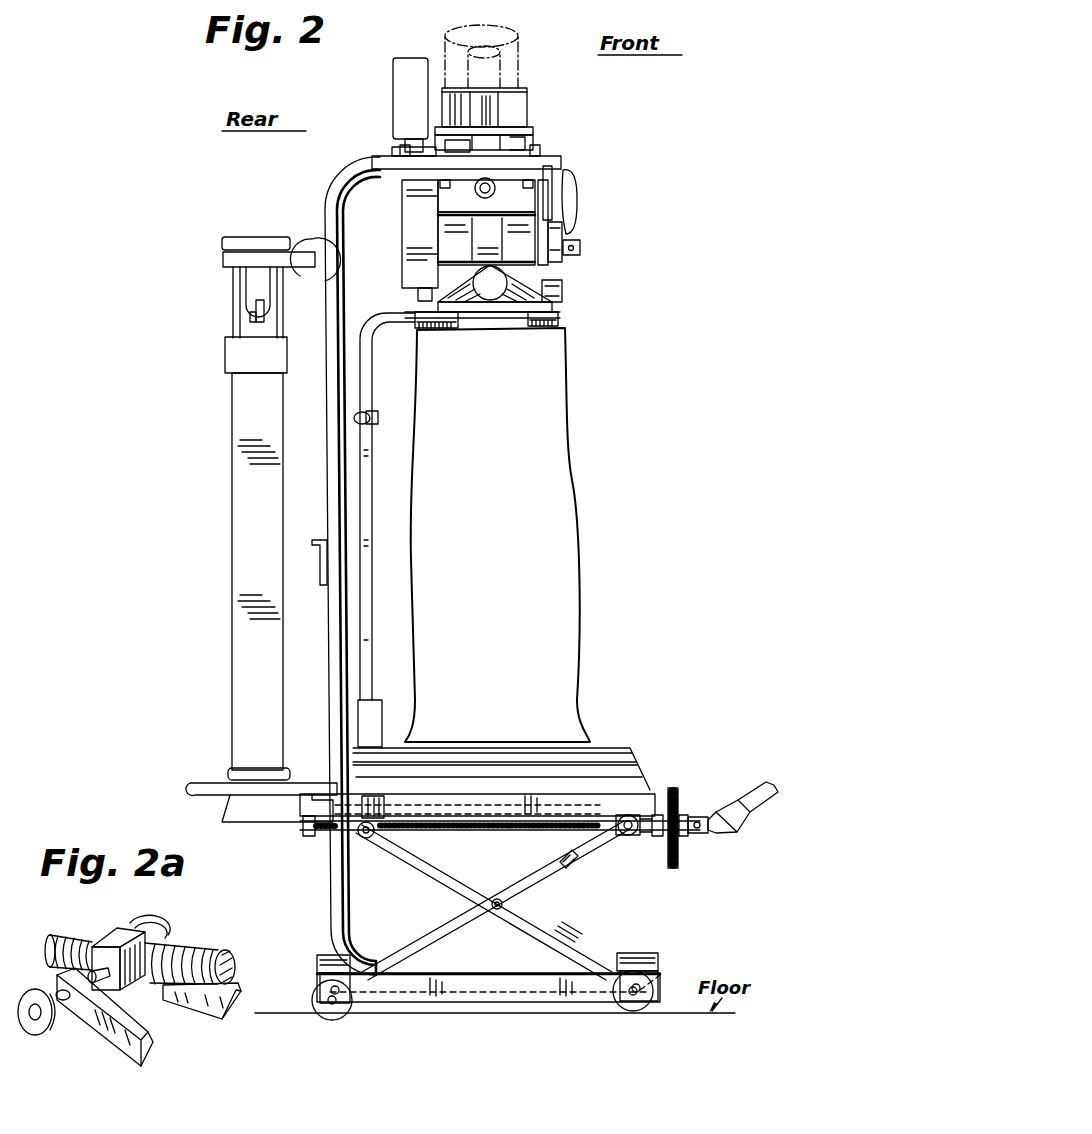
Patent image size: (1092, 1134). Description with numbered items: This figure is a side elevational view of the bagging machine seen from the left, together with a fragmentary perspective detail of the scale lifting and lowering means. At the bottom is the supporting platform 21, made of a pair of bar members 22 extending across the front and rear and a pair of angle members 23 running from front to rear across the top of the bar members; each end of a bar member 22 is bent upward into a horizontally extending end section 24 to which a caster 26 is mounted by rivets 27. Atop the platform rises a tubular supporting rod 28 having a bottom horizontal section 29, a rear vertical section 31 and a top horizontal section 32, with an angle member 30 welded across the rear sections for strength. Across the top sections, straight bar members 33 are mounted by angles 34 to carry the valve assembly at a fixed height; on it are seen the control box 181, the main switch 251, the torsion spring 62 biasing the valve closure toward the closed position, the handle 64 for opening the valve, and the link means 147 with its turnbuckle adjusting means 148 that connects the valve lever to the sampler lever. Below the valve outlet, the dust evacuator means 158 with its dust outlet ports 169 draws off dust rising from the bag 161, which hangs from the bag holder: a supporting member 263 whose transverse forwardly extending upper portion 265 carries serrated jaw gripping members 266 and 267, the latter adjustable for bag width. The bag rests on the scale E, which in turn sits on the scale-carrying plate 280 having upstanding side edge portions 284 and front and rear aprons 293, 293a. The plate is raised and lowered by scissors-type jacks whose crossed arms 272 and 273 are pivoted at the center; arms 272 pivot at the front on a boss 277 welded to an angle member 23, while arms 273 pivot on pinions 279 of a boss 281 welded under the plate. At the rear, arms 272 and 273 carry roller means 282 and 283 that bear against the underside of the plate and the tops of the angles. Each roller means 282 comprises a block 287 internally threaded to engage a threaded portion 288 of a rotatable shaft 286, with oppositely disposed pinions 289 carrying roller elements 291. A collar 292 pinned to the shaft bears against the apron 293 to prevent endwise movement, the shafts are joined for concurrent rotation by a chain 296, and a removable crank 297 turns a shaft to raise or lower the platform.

In FIG. 2, the control box 181 is at (410, 56).
In FIG. 2, the straight bar members 33 is at (404, 152).
In FIG. 2, the main switch 251 is at (398, 152).
In FIG. 2, the top horizontal section 32 is at (374, 157).
In FIG. 2, the angles 34 is at (528, 145).
In FIG. 2, the turnbuckle adjusting means 148 is at (552, 184).
In FIG. 2, the handle 64 is at (576, 196).
In FIG. 2, the link means 147 is at (556, 216).
In FIG. 2, the torsion spring 62 is at (566, 256).
In FIG. 2, the dust evacuator means 158 is at (570, 296).
In FIG. 2, the supporting rod 28 is at (326, 188).
In FIG. 2, the dust outlet ports 169 is at (495, 288).
In FIG. 2, the jaw gripping member 267 is at (437, 330).
In FIG. 2, the transverse forwardly extending upper portion 265 is at (487, 320).
In FIG. 2, the jaw gripping member 266 is at (540, 328).
In FIG. 2, the bag 161 is at (566, 372).
In FIG. 2, the supporting member 263 is at (381, 410).
In FIG. 2, the scale E is at (226, 437).
In FIG. 2, the angle member 30 is at (320, 540).
In FIG. 2, the rear vertical section 31 is at (340, 622).
In FIG. 2, the scale-carrying plate 280 is at (653, 788).
In FIG. 2, the apertured apron 293 is at (660, 826).
In FIG. 2, the chain 296 is at (678, 804).
In FIG. 2, the upstanding side edge portions 284 is at (592, 797).
In FIG. 2, the crank 297 is at (733, 806).
In FIG. 2, the apron 293a is at (310, 838).
In FIG. 2, the threaded portion 288 is at (440, 832).
In FIG. 2a, the threaded portion 288 is at (202, 955).
In FIG. 2, the rotatable shaft 286 is at (512, 832).
In FIG. 2, the crossed arm 273 is at (572, 860).
In FIG. 2, the pinions 279 is at (634, 838).
In FIG. 2, the boss 281 is at (642, 838).
In FIG. 2, the collar 292 is at (668, 840).
In FIG. 2, the roller means 282 is at (365, 842).
In FIG. 2a, the roller means 282 is at (106, 1062).
In FIG. 2, the block 287 is at (368, 862).
In FIG. 2a, the block 287 is at (110, 945).
In FIG. 2, the roller means 283 is at (365, 968).
In FIG. 2, the crossed arm 272 is at (580, 912).
In FIG. 2a, the crossed arm 272 is at (152, 1058).
In FIG. 2, the rivets 27 is at (322, 955).
In FIG. 2, the end section 24 is at (318, 968).
In FIG. 2, the caster 26 is at (320, 1000).
In FIG. 2, the bottom horizontal section 29 is at (448, 974).
In FIG. 2, the platform 21 is at (495, 973).
In FIG. 2, the boss 277 is at (662, 978).
In FIG. 2, the bar members 22 is at (352, 1006).
In FIG. 2, the angle members 23 is at (505, 992).
In FIG. 2a, the roller elements 291 is at (156, 928).
In FIG. 2a, the pinions 289 is at (110, 986).